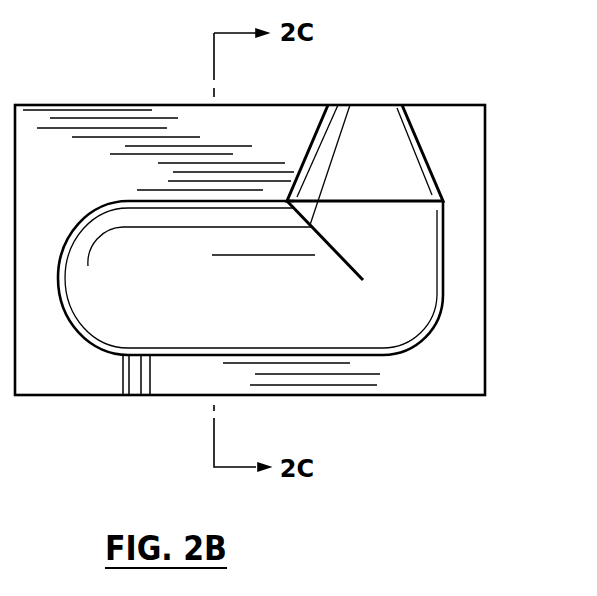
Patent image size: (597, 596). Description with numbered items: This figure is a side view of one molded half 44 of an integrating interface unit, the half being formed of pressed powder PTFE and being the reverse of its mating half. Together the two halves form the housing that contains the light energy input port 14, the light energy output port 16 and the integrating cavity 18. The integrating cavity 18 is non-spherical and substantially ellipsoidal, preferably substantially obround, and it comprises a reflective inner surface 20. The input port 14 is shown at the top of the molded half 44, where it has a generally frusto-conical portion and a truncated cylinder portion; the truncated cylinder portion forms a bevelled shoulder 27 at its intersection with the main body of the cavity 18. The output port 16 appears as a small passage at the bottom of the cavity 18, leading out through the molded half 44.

The light energy input port 14 is at (417, 140).
The light energy output port 16 is at (123, 377).
The integrating cavity 18 is at (155, 222).
The reflective inner surface 20 is at (148, 297).
The bevelled shoulder 27 is at (345, 258).
The molded half 44 is at (485, 355).